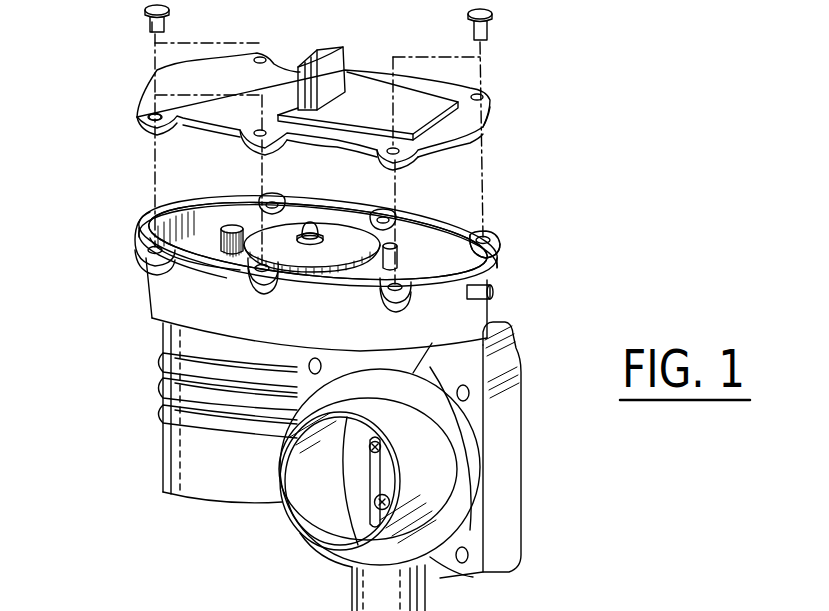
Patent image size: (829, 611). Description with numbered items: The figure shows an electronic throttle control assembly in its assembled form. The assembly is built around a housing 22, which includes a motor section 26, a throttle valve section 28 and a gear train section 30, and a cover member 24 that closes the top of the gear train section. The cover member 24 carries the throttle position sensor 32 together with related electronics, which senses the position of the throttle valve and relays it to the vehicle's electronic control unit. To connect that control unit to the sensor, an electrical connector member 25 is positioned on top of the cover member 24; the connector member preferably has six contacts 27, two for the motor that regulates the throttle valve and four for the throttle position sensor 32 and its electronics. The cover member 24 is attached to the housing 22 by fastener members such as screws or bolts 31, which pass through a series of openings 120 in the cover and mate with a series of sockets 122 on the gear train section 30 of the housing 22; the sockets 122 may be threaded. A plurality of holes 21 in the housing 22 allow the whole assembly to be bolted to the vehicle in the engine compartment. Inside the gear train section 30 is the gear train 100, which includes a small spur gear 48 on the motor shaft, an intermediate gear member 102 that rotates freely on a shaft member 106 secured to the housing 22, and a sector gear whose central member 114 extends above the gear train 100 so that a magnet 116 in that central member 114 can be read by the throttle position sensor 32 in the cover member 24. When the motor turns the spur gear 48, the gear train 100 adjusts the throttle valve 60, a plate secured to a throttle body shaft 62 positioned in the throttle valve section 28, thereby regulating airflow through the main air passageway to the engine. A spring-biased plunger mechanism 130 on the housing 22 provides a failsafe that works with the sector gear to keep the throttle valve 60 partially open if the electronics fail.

The holes 21 is at (315, 358).
The housing 22 is at (512, 390).
The cover member 24 is at (220, 75).
The electrical connector member 25 is at (306, 62).
The motor section 26 is at (182, 464).
The contacts 27 is at (508, 606).
The throttle valve section 28 is at (312, 542).
The gear train section 30 is at (148, 292).
The screws or bolts 31 is at (148, 19).
The throttle position sensor 32 is at (368, 93).
The spur gear 48 is at (231, 226).
The throttle valve 60 is at (358, 485).
The throttle body shaft 62 is at (372, 468).
The gear train 100 is at (370, 203).
The intermediate gear member 102 is at (286, 230).
The shaft member 106 is at (326, 230).
The central member 114 is at (400, 256).
The magnet 116 is at (460, 262).
The openings 120 is at (147, 117).
The sockets 122 is at (147, 249).
The spring-biased plunger mechanism 130 is at (497, 302).